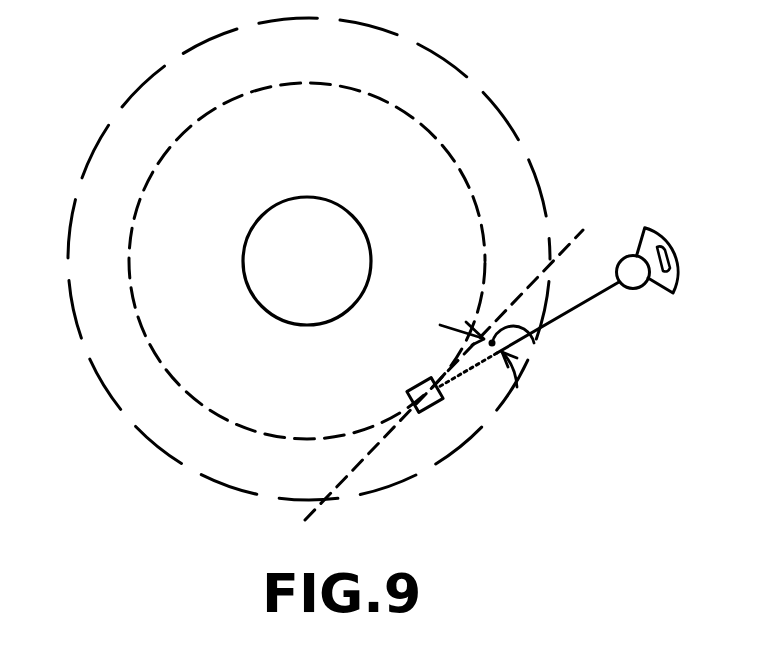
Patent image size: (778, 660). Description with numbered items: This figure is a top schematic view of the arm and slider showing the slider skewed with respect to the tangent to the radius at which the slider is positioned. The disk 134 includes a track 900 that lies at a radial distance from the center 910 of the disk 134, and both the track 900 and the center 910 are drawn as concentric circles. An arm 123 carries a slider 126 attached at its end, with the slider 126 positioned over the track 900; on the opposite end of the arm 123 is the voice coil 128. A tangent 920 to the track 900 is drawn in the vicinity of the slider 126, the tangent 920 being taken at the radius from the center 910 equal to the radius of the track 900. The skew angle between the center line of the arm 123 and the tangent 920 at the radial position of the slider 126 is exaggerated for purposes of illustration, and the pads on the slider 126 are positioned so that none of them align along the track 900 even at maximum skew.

The disk 134 is at (474, 107).
The track 900 is at (469, 190).
The center of the disk 910 is at (280, 240).
The tangent to the track 920 is at (578, 237).
The arm 123 is at (546, 320).
The slider 126 is at (436, 402).
The voice coil 128 is at (673, 240).